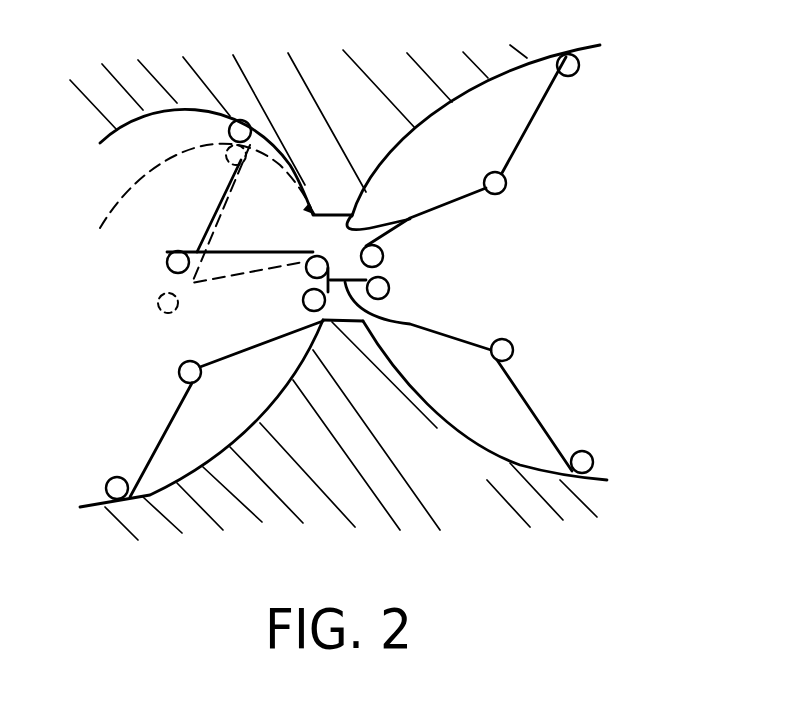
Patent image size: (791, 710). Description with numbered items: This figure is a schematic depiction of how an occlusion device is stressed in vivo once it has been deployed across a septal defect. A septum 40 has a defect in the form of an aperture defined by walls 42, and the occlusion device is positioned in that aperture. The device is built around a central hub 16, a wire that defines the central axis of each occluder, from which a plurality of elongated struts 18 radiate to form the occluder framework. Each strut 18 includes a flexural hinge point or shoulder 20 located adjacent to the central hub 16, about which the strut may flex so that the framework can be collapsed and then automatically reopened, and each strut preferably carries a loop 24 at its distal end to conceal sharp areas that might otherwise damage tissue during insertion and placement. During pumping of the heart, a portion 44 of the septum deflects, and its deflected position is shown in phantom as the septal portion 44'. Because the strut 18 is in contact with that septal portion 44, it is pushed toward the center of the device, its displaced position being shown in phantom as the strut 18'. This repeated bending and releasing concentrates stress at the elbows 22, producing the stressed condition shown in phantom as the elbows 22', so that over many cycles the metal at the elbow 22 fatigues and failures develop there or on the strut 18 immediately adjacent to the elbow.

The central hub 16 is at (412, 325).
The elongated strut 18 is at (399, 296).
The deflected strut 18' is at (247, 242).
The flexural hinge point or shoulder 20 is at (389, 288).
The elbow 22 is at (332, 306).
The stressed elbow 22' is at (119, 339).
The loop 24 is at (579, 72).
The septum 40 is at (478, 476).
The walls 42 is at (410, 218).
The septal portion 44 is at (202, 134).
The deflected septal portion 44' is at (180, 204).